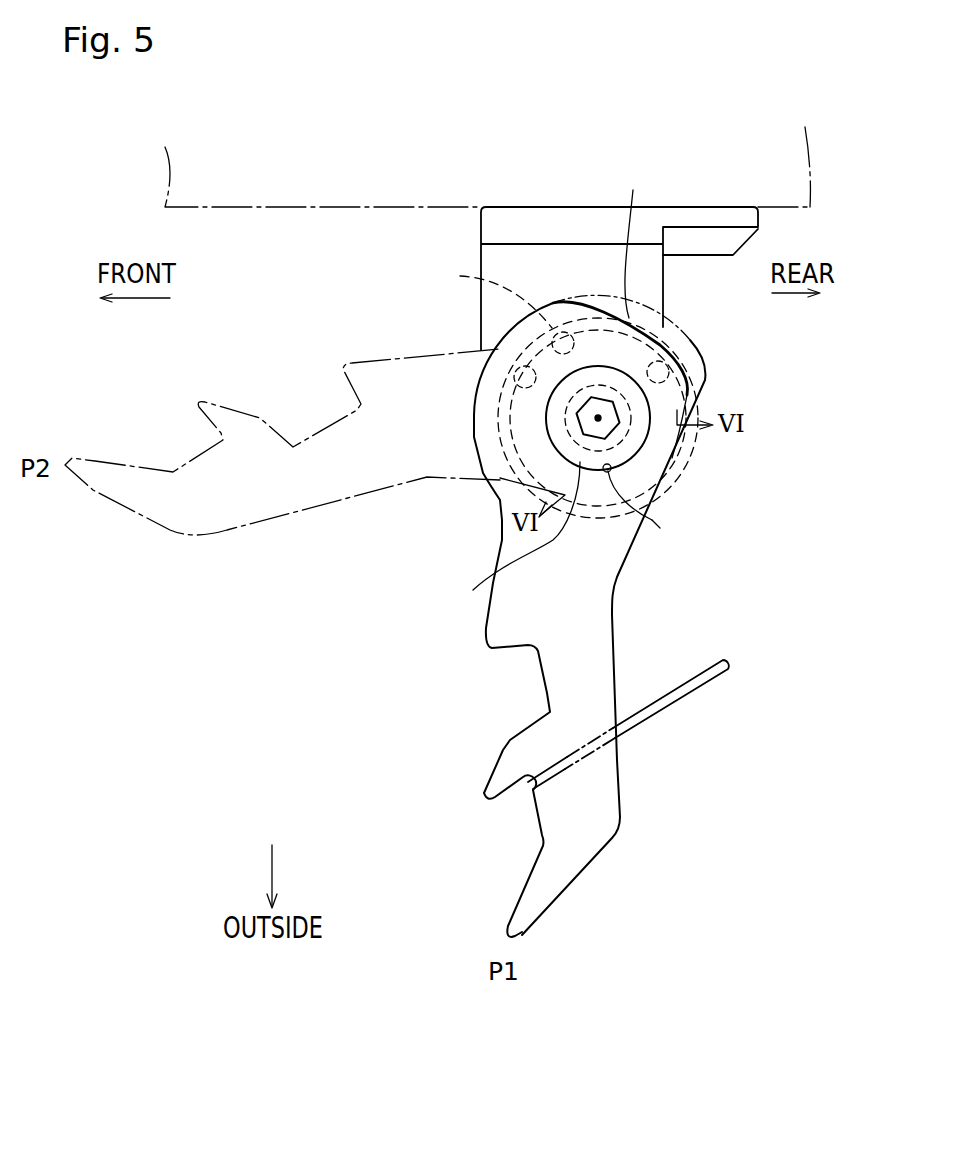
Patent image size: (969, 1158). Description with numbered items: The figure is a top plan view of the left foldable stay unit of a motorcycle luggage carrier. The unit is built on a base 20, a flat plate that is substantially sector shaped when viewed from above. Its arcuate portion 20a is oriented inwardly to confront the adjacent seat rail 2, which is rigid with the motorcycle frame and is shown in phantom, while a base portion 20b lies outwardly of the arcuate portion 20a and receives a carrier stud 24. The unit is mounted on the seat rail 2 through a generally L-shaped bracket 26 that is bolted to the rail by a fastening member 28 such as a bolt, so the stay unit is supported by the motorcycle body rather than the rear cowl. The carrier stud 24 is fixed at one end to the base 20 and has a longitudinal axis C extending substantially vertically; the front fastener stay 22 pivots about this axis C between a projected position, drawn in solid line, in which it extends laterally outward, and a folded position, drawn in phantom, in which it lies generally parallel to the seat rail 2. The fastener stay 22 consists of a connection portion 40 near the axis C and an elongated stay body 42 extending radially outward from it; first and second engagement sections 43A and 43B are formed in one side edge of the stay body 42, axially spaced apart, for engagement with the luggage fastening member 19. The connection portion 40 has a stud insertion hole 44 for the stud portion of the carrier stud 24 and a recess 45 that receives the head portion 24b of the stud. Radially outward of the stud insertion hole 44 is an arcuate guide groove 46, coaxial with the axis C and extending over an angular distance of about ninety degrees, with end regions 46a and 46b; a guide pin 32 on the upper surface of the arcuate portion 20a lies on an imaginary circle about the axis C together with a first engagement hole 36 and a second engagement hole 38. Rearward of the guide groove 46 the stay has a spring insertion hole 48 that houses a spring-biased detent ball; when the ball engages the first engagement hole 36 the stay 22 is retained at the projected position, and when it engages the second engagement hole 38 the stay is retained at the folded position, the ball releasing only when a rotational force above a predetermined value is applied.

The seat rail 2 is at (367, 209).
The luggage fastening member 19 is at (633, 734).
The base 20 is at (687, 379).
The arcuate portion 20a is at (640, 239).
The base portion 20b is at (612, 471).
The front fastener stay 22 is at (795, 478).
The carrier stud 24 is at (509, 676).
The head portion 24b is at (636, 450).
The bracket 26 is at (490, 257).
The fastening member 28 is at (732, 251).
The guide pin 32 is at (520, 357).
The first engagement hole 36 is at (562, 332).
The second engagement hole 38 is at (668, 362).
The connection portion 40 is at (668, 438).
The elongated stay body 42 is at (603, 627).
The first engagement section 43A is at (538, 823).
The second engagement section 43B is at (547, 687).
The stud insertion hole 44 is at (630, 418).
The recess 45 is at (652, 528).
The arcuate guide groove 46 is at (470, 378).
The spring end 46a is at (522, 492).
The spring end 46b is at (518, 330).
The spring insertion hole 48 is at (490, 294).
The axis of pivot C is at (598, 418).